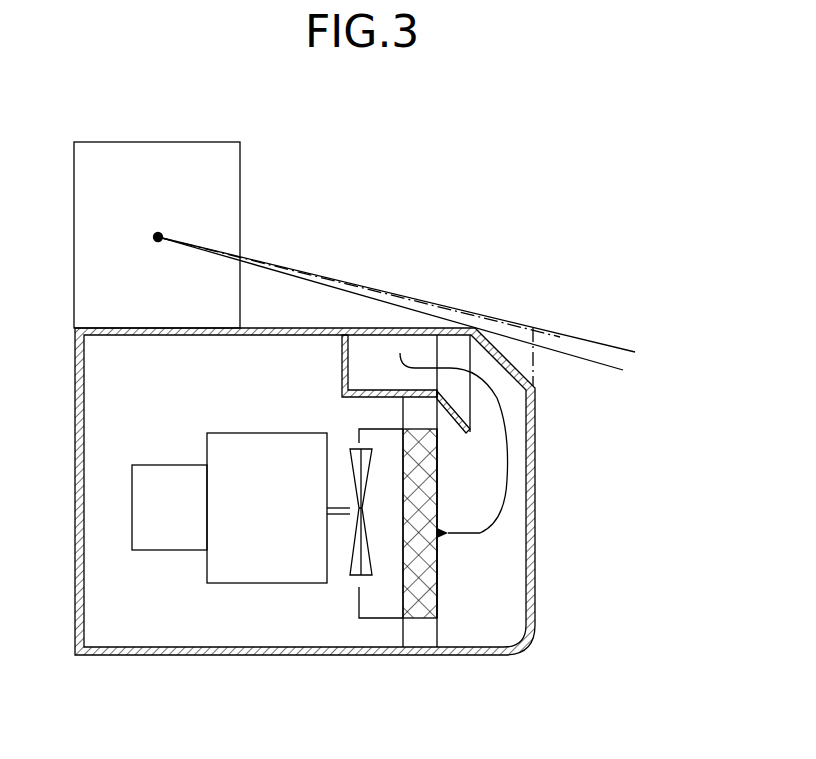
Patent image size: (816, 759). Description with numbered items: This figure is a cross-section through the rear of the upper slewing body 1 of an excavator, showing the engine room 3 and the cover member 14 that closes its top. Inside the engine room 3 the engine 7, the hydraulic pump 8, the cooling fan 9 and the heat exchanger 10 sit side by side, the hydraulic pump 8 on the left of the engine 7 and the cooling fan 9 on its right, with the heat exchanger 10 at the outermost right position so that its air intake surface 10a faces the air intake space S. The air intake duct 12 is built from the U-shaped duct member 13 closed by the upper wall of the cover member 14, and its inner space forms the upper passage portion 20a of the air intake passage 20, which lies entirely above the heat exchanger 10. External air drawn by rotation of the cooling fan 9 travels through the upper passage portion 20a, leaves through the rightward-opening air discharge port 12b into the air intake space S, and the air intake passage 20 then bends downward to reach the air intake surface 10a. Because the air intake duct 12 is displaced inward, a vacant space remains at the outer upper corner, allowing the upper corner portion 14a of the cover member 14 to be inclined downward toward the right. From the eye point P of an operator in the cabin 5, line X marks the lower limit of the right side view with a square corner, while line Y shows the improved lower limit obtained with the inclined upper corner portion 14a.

The upper slewing body 1 is at (580, 169).
The engine room 3 is at (260, 633).
The cabin 5 is at (240, 197).
The engine 7 is at (290, 433).
The hydraulic pump 8 is at (168, 551).
The cooling fan 9 is at (349, 572).
The heat exchanger 10 is at (418, 597).
The air intake surface 10a is at (437, 557).
The air intake duct 12 is at (403, 238).
The air discharge port 12b is at (463, 358).
The duct member 13 is at (341, 347).
The cover member 14 is at (402, 328).
The upper corner portion 14a is at (503, 353).
The air intake passage 20 is at (500, 472).
The upper passage portion 20a is at (403, 348).
The eye point P is at (158, 242).
The air intake space S is at (523, 488).
The lower limit line of right side view X is at (598, 343).
The lower limit line of right side view Y is at (575, 358).